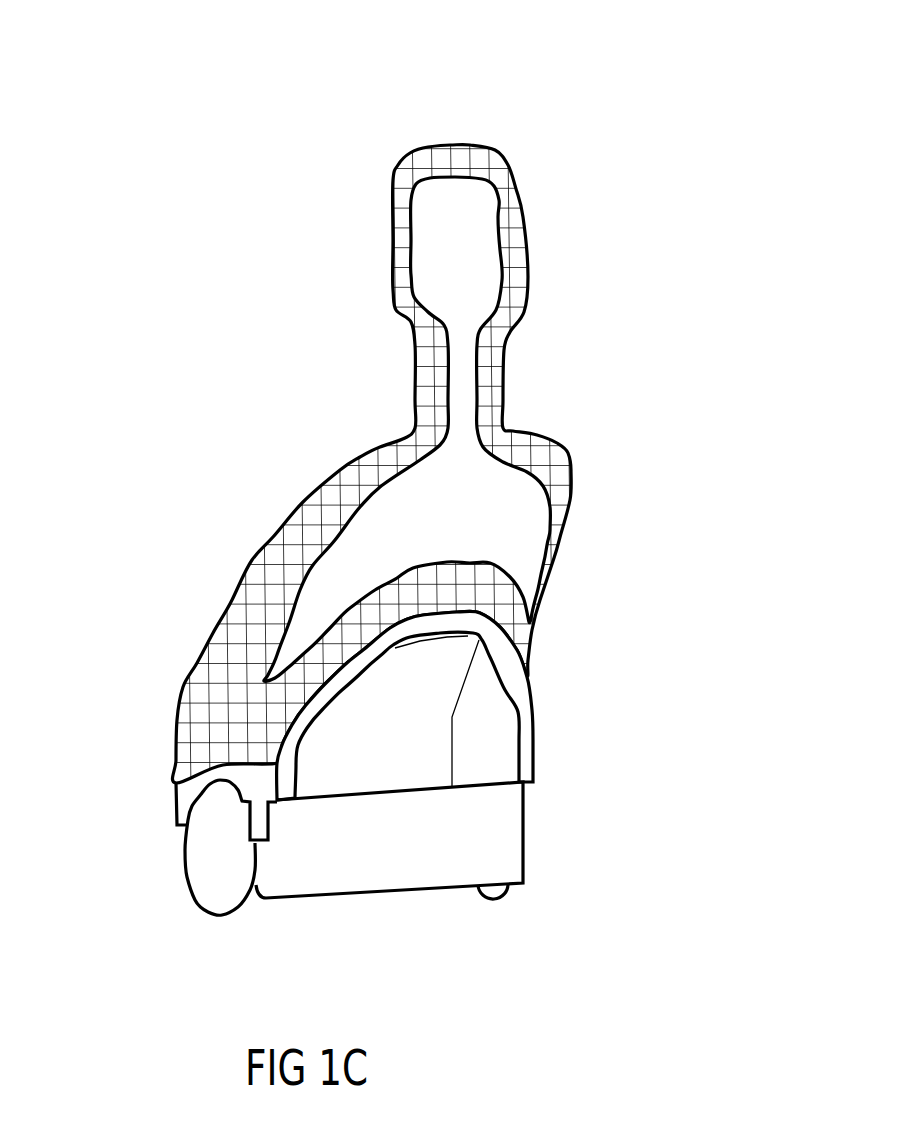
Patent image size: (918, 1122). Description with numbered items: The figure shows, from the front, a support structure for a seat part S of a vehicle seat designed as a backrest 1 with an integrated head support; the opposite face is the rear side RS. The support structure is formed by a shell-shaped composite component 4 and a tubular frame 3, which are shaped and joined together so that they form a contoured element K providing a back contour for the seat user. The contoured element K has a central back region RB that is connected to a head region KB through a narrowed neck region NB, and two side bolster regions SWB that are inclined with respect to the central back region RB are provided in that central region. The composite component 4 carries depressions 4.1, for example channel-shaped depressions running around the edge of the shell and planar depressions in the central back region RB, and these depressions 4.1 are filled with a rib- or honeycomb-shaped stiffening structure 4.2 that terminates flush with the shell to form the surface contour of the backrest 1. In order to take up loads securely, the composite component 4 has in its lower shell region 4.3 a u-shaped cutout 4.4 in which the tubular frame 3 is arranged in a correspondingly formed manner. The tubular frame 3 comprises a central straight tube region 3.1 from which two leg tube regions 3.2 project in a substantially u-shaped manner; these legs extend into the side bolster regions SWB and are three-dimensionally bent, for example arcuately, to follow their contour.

The backrest 1 is at (398, 515).
The tubular frame 3 is at (374, 705).
The central straight tube region 3.1 is at (474, 646).
The leg tube regions 3.2 is at (278, 737).
The composite component 4 is at (411, 433).
The depressions 4.1 is at (517, 288).
The stiffening structure 4.2 is at (512, 213).
The lower shell region 4.3 is at (530, 530).
The u-shaped cutout 4.4 is at (393, 768).
The seat part S is at (212, 247).
The head region KB is at (366, 205).
The neck region NB is at (362, 360).
The contoured element K is at (300, 494).
The central back region RB is at (233, 538).
The side bolster regions SWB is at (235, 605).
The rear side RS is at (583, 608).